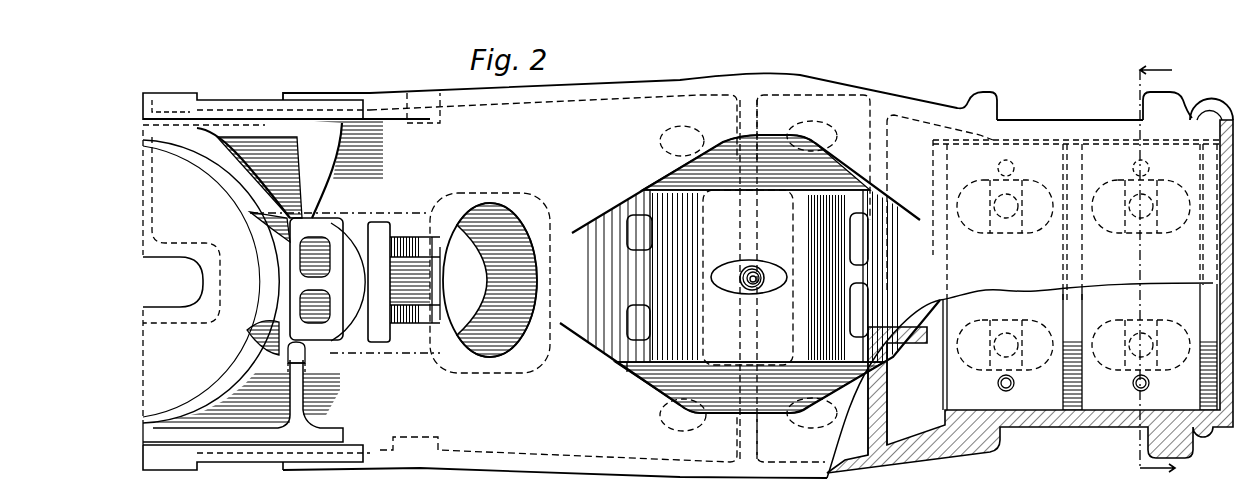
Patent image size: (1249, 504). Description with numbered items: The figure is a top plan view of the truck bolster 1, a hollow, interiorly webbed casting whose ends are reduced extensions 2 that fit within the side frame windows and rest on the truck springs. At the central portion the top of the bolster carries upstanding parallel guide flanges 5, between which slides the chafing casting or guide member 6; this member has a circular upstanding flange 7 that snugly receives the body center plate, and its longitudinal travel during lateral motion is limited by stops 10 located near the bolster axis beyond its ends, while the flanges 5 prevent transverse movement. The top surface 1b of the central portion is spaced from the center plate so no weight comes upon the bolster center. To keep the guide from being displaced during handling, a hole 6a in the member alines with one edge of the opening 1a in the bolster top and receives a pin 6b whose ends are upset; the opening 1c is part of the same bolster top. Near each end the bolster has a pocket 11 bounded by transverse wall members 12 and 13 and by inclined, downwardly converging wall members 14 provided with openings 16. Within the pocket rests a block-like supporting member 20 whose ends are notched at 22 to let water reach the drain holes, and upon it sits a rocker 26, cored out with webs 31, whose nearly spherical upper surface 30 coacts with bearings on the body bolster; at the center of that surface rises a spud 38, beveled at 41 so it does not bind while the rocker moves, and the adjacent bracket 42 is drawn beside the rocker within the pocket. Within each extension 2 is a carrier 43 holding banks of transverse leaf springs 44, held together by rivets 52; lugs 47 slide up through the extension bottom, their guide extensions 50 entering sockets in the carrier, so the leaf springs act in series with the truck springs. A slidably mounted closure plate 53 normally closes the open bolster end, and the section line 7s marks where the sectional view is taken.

The bolster 1 is at (648, 82).
The opening in the top of the bolster 1a is at (241, 348).
The top surface of the central bolster portion 1b is at (163, 357).
The opening in frame 1c is at (490, 283).
The reduced extension 2 is at (1044, 125).
The guide flange 5 is at (252, 110).
The guide member 6 is at (317, 225).
The hole 6a is at (293, 340).
The pin 6b is at (300, 360).
The circular upstanding flange 7 is at (240, 397).
The section line 7-7 7s is at (1154, 273).
The stop 10 is at (383, 223).
The pocket 11 is at (652, 178).
The transverse wall member 12 is at (630, 318).
The transverse wall member 13 is at (870, 250).
The inclined wall member 14 is at (718, 160).
The opening 16 is at (672, 131).
The supporting member 20 is at (627, 337).
The notch 22 is at (862, 282).
The rocker 26 is at (692, 352).
The upper surface 30 is at (733, 293).
The web 31 is at (753, 235).
The spud 38 is at (740, 275).
The beveled side of spud 41 is at (757, 292).
The upper bracket 42 is at (633, 285).
The carrier 43 is at (945, 402).
The leaf spring 44 is at (1047, 403).
The lug 47 is at (1042, 370).
The guide extension 50 is at (1010, 327).
The rivet 52 is at (1011, 167).
The closure plate 53 is at (1220, 102).